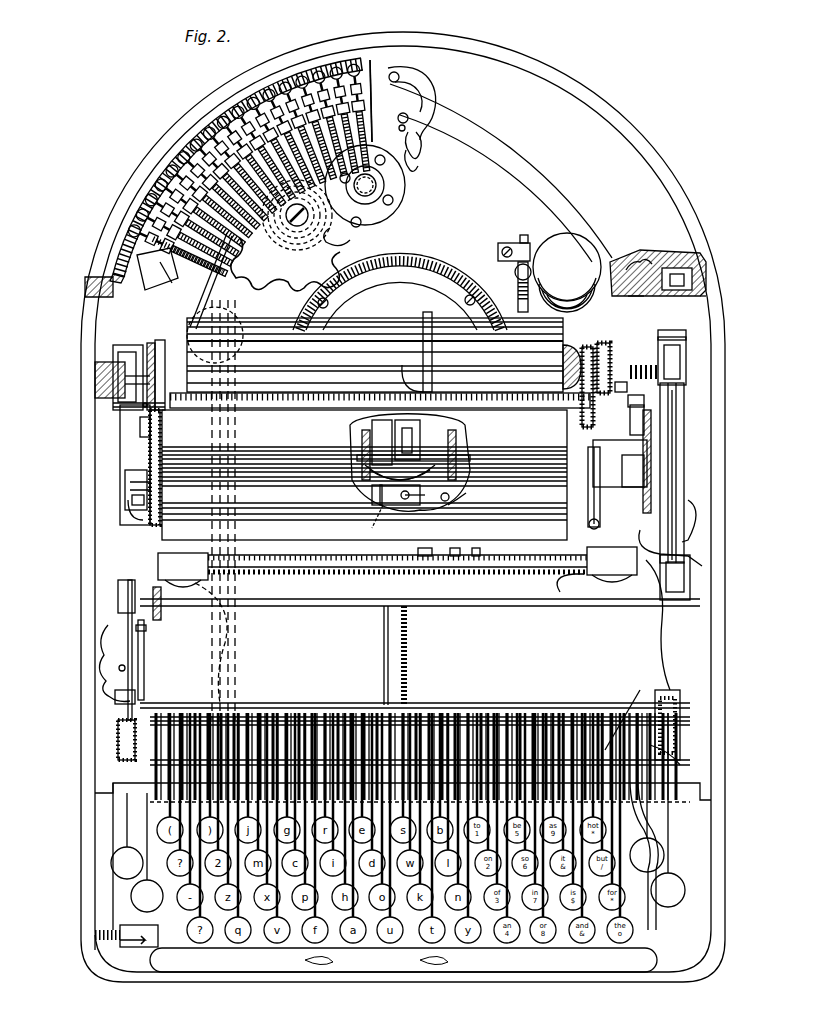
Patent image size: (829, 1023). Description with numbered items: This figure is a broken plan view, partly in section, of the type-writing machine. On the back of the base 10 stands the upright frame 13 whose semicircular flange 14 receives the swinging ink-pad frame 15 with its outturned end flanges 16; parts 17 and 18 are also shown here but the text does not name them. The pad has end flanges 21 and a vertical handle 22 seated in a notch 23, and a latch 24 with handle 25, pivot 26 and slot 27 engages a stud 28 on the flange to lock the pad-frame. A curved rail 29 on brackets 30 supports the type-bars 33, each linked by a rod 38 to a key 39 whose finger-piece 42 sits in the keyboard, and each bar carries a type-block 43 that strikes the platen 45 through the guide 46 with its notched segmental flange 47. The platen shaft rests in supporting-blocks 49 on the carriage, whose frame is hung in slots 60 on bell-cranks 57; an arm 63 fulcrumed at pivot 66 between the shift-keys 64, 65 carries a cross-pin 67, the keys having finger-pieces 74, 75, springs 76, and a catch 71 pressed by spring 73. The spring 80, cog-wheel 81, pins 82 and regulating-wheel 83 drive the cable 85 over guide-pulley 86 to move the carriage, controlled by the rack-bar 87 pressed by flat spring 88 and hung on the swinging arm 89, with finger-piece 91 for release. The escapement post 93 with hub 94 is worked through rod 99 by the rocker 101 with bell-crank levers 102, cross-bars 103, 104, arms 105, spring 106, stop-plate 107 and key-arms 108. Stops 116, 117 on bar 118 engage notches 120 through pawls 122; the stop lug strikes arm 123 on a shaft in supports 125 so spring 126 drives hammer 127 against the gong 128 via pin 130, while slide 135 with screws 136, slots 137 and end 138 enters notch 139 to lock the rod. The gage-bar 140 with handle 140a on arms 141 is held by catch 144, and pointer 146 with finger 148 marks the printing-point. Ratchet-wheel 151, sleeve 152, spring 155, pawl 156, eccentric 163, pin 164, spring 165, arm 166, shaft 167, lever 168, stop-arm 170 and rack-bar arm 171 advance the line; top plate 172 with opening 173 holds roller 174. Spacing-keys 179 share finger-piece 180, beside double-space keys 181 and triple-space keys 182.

The base 10 is at (403, 507).
The upright frame 13 is at (125, 200).
The semicircular flange 14 is at (612, 200).
The ink-pad frame 15 is at (585, 232).
The outturned end flanges 16 is at (640, 258).
The knob 17 is at (677, 273).
The spring 18 is at (664, 296).
The flanges 21 is at (646, 297).
The vertical handle 22 is at (408, 120).
The notch 23 is at (412, 96).
The latch 24 is at (410, 120).
The handle 25 is at (406, 166).
The pivot 26 is at (418, 145).
The slot 27 is at (398, 76).
The screw or stud 28 is at (373, 100).
The curved rail 29 is at (148, 284).
The brackets 30 is at (166, 280).
The type-bar 33 is at (358, 146).
The rod 38 is at (134, 231).
The key 39 is at (238, 652).
The finger-piece 42 is at (290, 896).
The type-block 43 is at (574, 348).
The platen 45 is at (160, 342).
The guide 46 is at (436, 268).
The vertical segmental flange 47 is at (410, 262).
The supporting-blocks 49 is at (125, 372).
The bell-cranks 57 is at (120, 592).
The slots 60 is at (122, 460).
The arm 63 is at (150, 648).
The shift-key 64 is at (145, 803).
The shift-key 65 is at (126, 822).
The pivot 66 is at (120, 700).
The cross-pin 67 is at (146, 636).
The catch 71 is at (140, 946).
The spring 73 is at (112, 930).
The finger-piece 74 is at (130, 897).
The finger-piece 75 is at (110, 860).
The springs 76 is at (690, 297).
The spring 80 is at (290, 250).
The cog-wheel 81 is at (340, 240).
The pins 82 is at (394, 200).
The regulating-wheel 83 is at (388, 222).
The cable 85 is at (196, 312).
The guide-pulley 86 is at (220, 329).
The rack-bar 87 is at (126, 482).
The flat spring 88 is at (432, 490).
The swinging arm 89 is at (650, 475).
The finger-piece 91 is at (130, 502).
The hollow post 93 is at (412, 428).
The hub 94 is at (446, 502).
The rod 99 is at (382, 636).
The rocker 101 is at (556, 702).
The bell-crank levers 102 is at (130, 745).
The cross-bar 103 is at (446, 715).
The cross-bar 104 is at (431, 763).
The arms 105 is at (166, 620).
The spring 106 is at (422, 655).
The stop-plate 107 is at (428, 570).
The key-arms 108 is at (296, 770).
The stop 116 is at (180, 555).
The stop 117 is at (604, 578).
The bar 118 is at (397, 573).
The notches 120 is at (493, 571).
The pawls 122 is at (393, 638).
The arm 123 is at (519, 571).
The supports 125 is at (518, 242).
The spring 126 is at (518, 290).
The hammer 127 is at (515, 268).
The bell or gong 128 is at (567, 272).
The pin 130 is at (95, 380).
The slide 135 is at (458, 506).
The screws 136 is at (405, 500).
The slots 137 is at (423, 519).
The elongated end 138 is at (364, 524).
The notch 139 is at (375, 504).
The gage-bar 140 is at (274, 409).
The handle 140a is at (130, 410).
The arms 141 is at (148, 430).
The catch 144 is at (150, 345).
The curved pointer 146 is at (425, 314).
The finger 148 is at (407, 378).
The ratchet-wheel 151 is at (590, 350).
The sleeve 152 is at (612, 364).
The spring 155 is at (645, 366).
The pawl 156 is at (606, 478).
The eccentric 163 is at (645, 404).
The pin 164 is at (628, 430).
The spring 165 is at (626, 388).
The vertically-swinging arm 166 is at (684, 404).
The shaft 167 is at (676, 454).
The lever 168 is at (705, 521).
The stop-arm 170 is at (683, 549).
The arm 171 is at (636, 472).
The top plate 172 is at (364, 453).
The opening 173 is at (375, 351).
The roller 174 is at (350, 335).
The spacing-keys 179 is at (642, 916).
The finger-piece 180 is at (262, 972).
The double-space keys 181 is at (652, 828).
The triple-space keys 182 is at (672, 862).